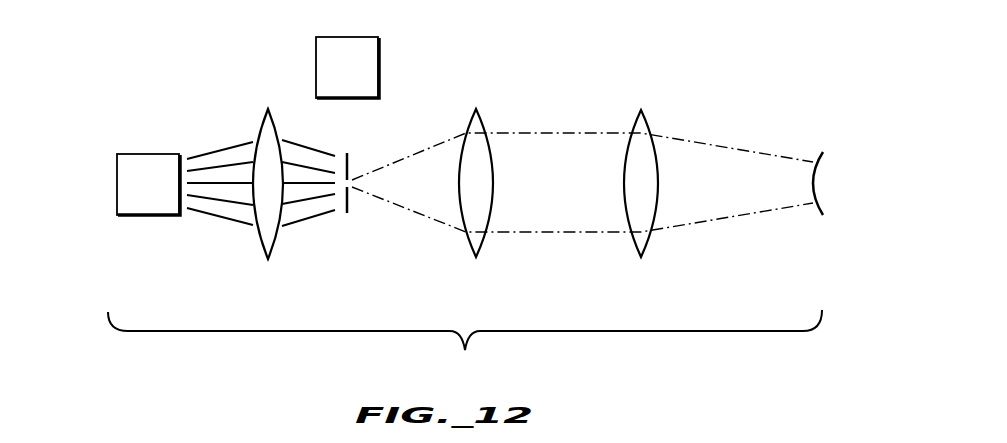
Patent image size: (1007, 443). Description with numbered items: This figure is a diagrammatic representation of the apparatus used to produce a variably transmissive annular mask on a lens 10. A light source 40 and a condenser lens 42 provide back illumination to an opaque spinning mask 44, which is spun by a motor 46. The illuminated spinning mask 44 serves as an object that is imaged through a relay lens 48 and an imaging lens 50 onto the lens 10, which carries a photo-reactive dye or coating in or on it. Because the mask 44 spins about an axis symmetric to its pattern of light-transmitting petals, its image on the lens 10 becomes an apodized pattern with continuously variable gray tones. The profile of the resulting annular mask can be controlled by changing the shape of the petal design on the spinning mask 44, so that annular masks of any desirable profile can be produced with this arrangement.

The lens 10 is at (813, 153).
The light source 40 is at (132, 153).
The condenser lens 42 is at (255, 236).
The spinning mask 44 is at (348, 203).
The motor 46 is at (337, 36).
The relay lens 48 is at (480, 113).
The imaging lens 50 is at (645, 124).